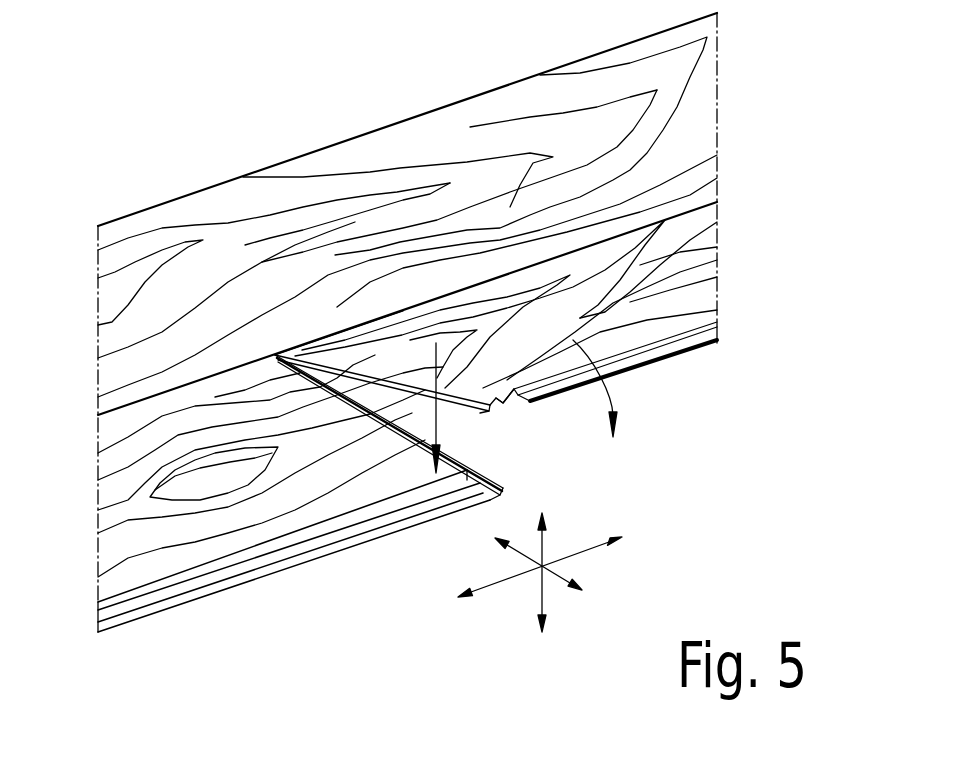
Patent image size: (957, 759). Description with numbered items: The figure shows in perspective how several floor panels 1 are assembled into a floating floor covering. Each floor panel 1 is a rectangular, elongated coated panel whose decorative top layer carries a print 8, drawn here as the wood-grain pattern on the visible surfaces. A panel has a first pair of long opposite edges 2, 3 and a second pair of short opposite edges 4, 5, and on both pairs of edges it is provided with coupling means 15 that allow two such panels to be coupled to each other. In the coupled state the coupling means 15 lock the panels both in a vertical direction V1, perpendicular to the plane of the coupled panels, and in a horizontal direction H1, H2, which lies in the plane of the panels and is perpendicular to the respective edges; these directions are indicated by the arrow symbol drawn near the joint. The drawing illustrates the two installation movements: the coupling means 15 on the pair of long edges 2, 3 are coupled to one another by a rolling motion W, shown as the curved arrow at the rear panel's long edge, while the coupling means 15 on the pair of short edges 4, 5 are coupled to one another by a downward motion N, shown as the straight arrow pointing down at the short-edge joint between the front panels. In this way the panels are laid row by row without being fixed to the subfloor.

The floor panel 1 is at (433, 147).
The long edge 2 is at (403, 305).
The long edge 3 is at (275, 550).
The short edge 4 is at (510, 454).
The short edge 5 is at (467, 465).
The print 8 is at (195, 215).
The coupling means 15 is at (732, 330).
The downward motion N is at (462, 400).
The rolling motion W is at (611, 402).
The vertical direction V1 is at (545, 550).
The horizontal direction H1 is at (573, 550).
The horizontal direction H2 is at (550, 572).